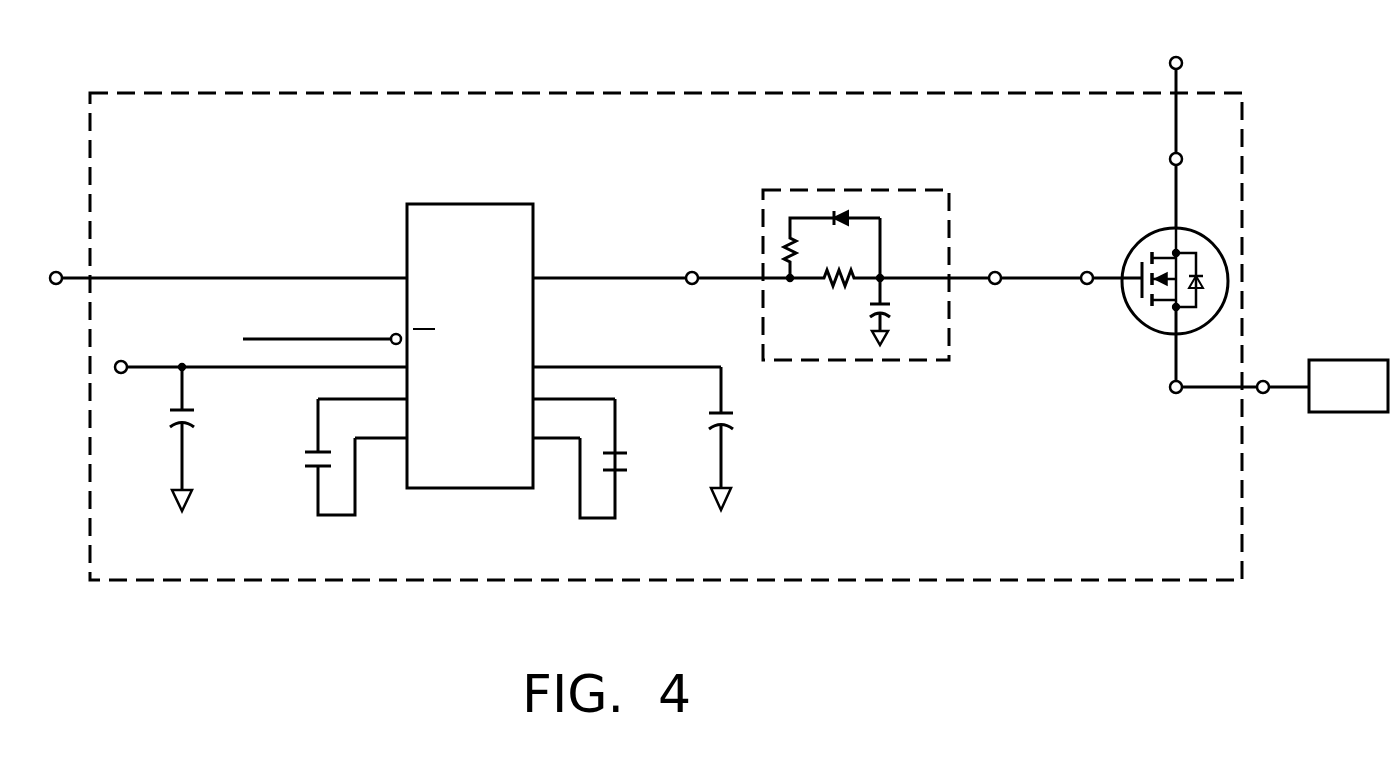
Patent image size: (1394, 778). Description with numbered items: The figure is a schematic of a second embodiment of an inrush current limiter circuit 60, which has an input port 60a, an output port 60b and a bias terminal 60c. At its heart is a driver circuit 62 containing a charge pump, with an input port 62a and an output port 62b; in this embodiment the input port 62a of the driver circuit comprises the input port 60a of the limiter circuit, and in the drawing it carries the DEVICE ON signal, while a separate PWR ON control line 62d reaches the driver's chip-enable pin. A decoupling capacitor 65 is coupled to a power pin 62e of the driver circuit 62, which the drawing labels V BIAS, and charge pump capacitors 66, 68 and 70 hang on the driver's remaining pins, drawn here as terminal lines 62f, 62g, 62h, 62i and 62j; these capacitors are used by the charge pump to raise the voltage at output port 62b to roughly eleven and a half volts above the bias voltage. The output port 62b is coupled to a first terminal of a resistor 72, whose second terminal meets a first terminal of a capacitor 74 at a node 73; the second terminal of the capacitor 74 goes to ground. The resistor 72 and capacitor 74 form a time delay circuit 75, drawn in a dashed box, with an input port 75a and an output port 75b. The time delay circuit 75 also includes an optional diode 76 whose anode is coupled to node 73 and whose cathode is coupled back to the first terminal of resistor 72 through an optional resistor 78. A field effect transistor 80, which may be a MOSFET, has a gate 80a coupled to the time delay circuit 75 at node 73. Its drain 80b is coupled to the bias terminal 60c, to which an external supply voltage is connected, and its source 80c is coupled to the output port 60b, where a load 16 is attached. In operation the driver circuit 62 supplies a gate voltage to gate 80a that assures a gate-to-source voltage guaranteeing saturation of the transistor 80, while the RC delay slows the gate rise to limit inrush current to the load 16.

The load 16 is at (1322, 360).
The inrush current limiter circuit 60 is at (1007, 93).
The input port 60a is at (60, 272).
The output port 60b is at (1263, 395).
The bias terminal 60c is at (1174, 81).
The driver circuit 62 is at (485, 204).
The input port 62a is at (368, 276).
The output port 62b is at (577, 278).
The power-on (chip enable) input 62d is at (272, 339).
The power pin 62e is at (233, 369).
The C1+ terminal line 62f is at (372, 399).
The C1- terminal line 62g is at (373, 442).
The C2- terminal line 62h is at (556, 440).
The C2+ terminal line 62i is at (560, 399).
The V- output line 62j is at (558, 367).
The decoupling capacitor 65 is at (172, 408).
The capacitor 66 is at (310, 468).
The capacitor 68 is at (625, 470).
The capacitor 70 is at (730, 412).
The resistor 72 is at (843, 283).
The node 73 is at (882, 278).
The capacitor 74 is at (889, 313).
The time delay circuit 75 is at (812, 190).
The input port 75a is at (724, 278).
The output port 75b is at (960, 278).
The diode 76 is at (848, 215).
The resistor 78 is at (795, 256).
The field effect transistor 80 is at (1125, 236).
The gate 80a is at (1103, 284).
The drain 80b is at (1172, 191).
The source 80c is at (1165, 364).